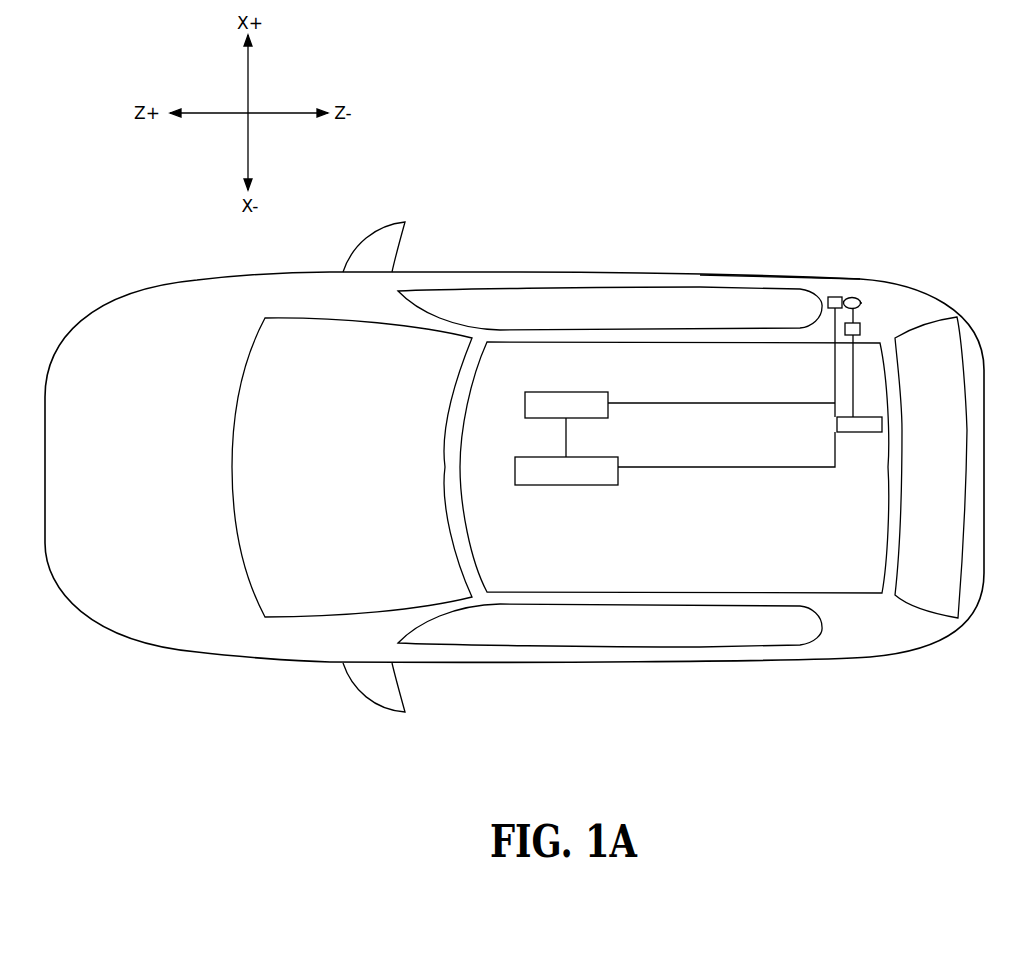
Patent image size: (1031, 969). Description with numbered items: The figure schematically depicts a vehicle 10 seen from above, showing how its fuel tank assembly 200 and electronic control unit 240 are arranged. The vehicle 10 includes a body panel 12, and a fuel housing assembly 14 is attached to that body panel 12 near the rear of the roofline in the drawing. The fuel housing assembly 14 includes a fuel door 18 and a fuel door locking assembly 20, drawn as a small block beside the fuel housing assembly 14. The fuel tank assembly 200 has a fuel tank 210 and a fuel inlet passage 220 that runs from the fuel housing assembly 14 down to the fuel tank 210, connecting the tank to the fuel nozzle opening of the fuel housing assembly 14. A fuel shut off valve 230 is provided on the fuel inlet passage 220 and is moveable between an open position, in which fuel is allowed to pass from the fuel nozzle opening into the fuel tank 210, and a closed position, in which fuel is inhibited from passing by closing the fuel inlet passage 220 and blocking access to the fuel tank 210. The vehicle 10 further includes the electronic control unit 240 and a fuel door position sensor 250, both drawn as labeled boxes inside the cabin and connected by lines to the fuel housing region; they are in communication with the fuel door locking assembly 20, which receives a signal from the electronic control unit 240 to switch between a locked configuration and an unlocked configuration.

The vehicle 10 is at (532, 412).
The fuel tank assembly 200 is at (532, 467).
The body panel 12 is at (815, 280).
The fuel housing assembly 14 is at (865, 288).
The fuel door 18 is at (893, 278).
The fuel door locking assembly 20 is at (833, 297).
The fuel tank 210 is at (883, 426).
The fuel inlet passage 220 is at (855, 383).
The fuel shut off valve 230 is at (861, 331).
The electronic control unit 240 is at (580, 485).
The fuel door position sensor 250 is at (540, 392).